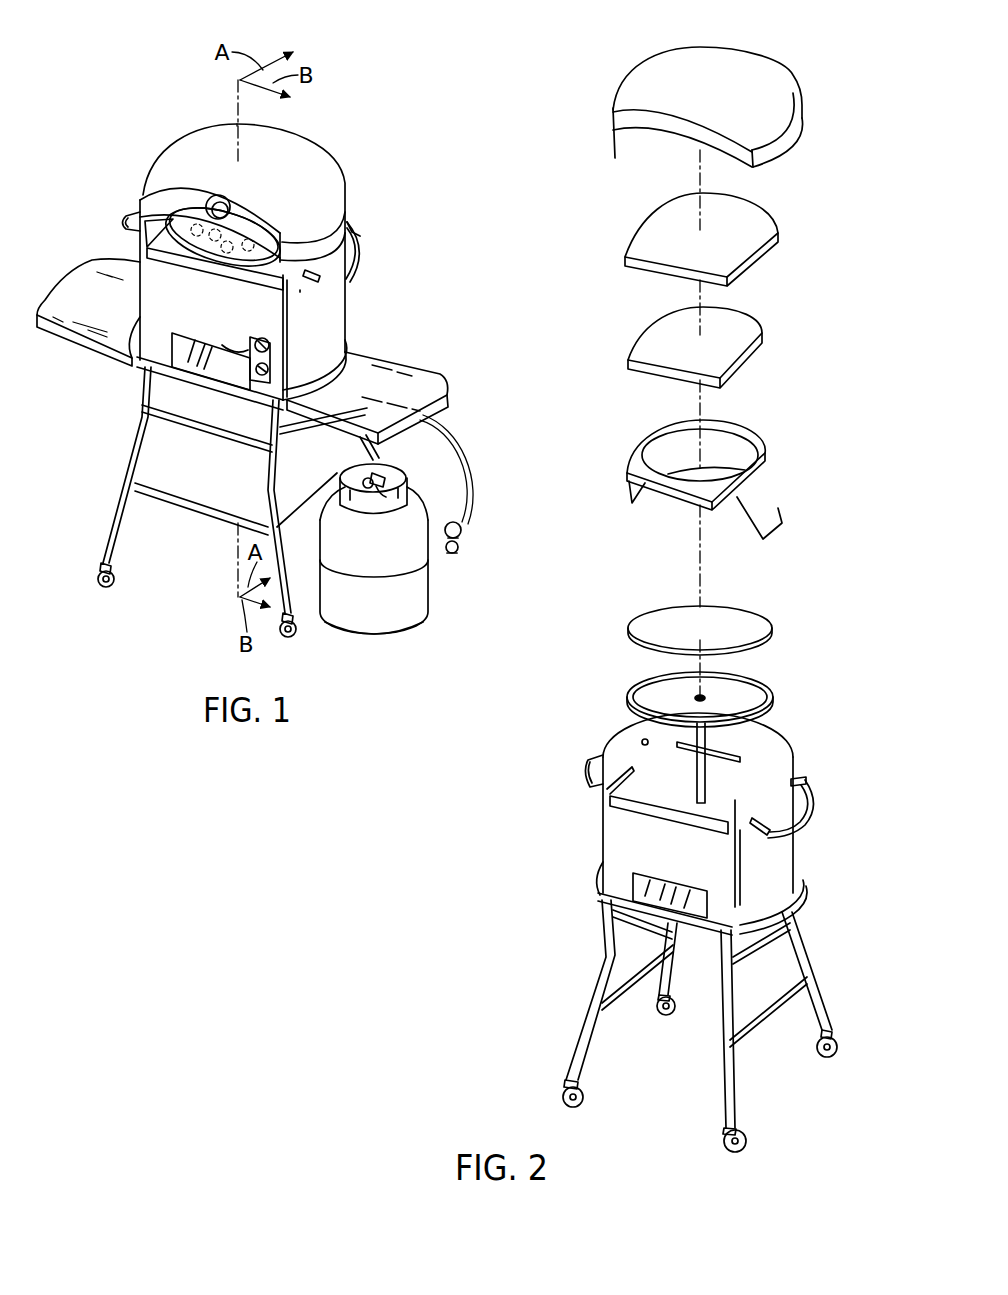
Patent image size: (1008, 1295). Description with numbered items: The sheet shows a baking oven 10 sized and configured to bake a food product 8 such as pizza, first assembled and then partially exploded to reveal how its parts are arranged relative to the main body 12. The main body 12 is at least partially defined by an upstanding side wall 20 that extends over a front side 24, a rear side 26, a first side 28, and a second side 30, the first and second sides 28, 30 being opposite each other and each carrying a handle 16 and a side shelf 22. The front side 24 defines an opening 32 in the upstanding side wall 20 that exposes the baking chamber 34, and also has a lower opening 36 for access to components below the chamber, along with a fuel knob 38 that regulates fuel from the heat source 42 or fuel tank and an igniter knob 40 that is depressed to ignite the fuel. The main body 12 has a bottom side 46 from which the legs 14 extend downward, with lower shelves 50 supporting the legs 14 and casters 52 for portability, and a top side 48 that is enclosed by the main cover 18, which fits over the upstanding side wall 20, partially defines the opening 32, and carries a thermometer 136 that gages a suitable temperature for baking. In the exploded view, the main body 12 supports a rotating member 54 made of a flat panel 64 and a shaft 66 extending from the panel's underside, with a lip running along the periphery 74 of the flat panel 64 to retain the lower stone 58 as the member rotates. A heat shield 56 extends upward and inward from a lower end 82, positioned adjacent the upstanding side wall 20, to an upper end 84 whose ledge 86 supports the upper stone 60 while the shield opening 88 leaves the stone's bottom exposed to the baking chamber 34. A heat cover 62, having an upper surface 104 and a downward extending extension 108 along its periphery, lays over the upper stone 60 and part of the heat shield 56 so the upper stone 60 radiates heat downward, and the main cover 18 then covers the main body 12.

In FIG. 1, the food product 8 is at (240, 253).
In FIG. 1, the baking oven 10 is at (143, 603).
In FIG. 2, the baking oven 10 is at (537, 1047).
In FIG. 1, the main body 12 is at (412, 248).
In FIG. 2, the main body 12 is at (585, 832).
In FIG. 1, the legs 14 is at (118, 502).
In FIG. 1, the handles 16 is at (127, 217).
In FIG. 1, the main cover 18 is at (312, 152).
In FIG. 2, the main cover 18 is at (792, 64).
In FIG. 1, the upstanding side wall 20 is at (328, 303).
In FIG. 1, the side shelves 22 is at (433, 373).
In FIG. 1, the front side 24 is at (148, 267).
In FIG. 1, the rear side 26 is at (358, 217).
In FIG. 1, the first side 28 is at (337, 315).
In FIG. 1, the second side 30 is at (138, 303).
In FIG. 1, the opening 32 is at (148, 253).
In FIG. 1, the baking chamber 34 is at (220, 278).
In FIG. 1, the lower opening 36 is at (145, 367).
In FIG. 1, the fuel knob 38 is at (263, 343).
In FIG. 1, the igniter knob 40 is at (270, 370).
In FIG. 1, the heat source 42 is at (420, 587).
In FIG. 1, the bottom side 46 is at (213, 390).
In FIG. 1, the top side 48 is at (212, 122).
In FIG. 1, the lower shelves 50 is at (193, 503).
In FIG. 1, the casters 52 is at (117, 570).
In FIG. 2, the rotating member 54 is at (782, 692).
In FIG. 2, the heat shield 56 is at (787, 480).
In FIG. 2, the lower stone 58 is at (773, 630).
In FIG. 2, the upper stone 60 is at (770, 342).
In FIG. 2, the heat cover 62 is at (793, 223).
In FIG. 2, the flat panel 64 is at (620, 695).
In FIG. 2, the shaft 66 is at (702, 770).
In FIG. 2, the periphery 74 is at (765, 708).
In FIG. 2, the lower end 82 is at (768, 510).
In FIG. 2, the upper end 84 is at (770, 450).
In FIG. 2, the ledge 86 is at (752, 443).
In FIG. 2, the shield opening 88 is at (650, 460).
In FIG. 2, the upper surface 104 is at (732, 208).
In FIG. 2, the downward extending extension 108 is at (753, 272).
In FIG. 1, the thermometer 136 is at (230, 197).